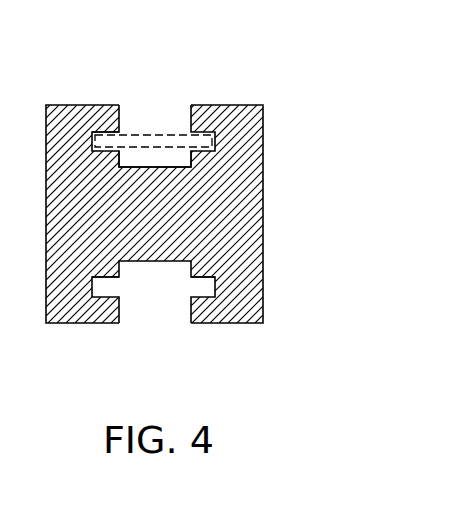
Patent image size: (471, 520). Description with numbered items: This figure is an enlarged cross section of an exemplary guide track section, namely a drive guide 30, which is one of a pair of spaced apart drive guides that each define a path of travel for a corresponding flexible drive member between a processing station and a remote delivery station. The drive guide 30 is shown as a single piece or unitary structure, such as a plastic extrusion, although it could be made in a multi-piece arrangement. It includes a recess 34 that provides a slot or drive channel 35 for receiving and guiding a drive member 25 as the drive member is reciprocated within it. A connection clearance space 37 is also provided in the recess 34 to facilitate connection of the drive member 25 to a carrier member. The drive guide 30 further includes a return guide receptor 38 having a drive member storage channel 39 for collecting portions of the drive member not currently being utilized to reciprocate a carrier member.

The drive guide 30 is at (268, 119).
The recess 34 is at (187, 84).
The drive member 25 is at (153, 130).
The drive channel 35 is at (93, 144).
The connection clearance space 37 is at (168, 163).
The return guide receptor 38 is at (165, 323).
The drive member storage channel 39 is at (108, 288).